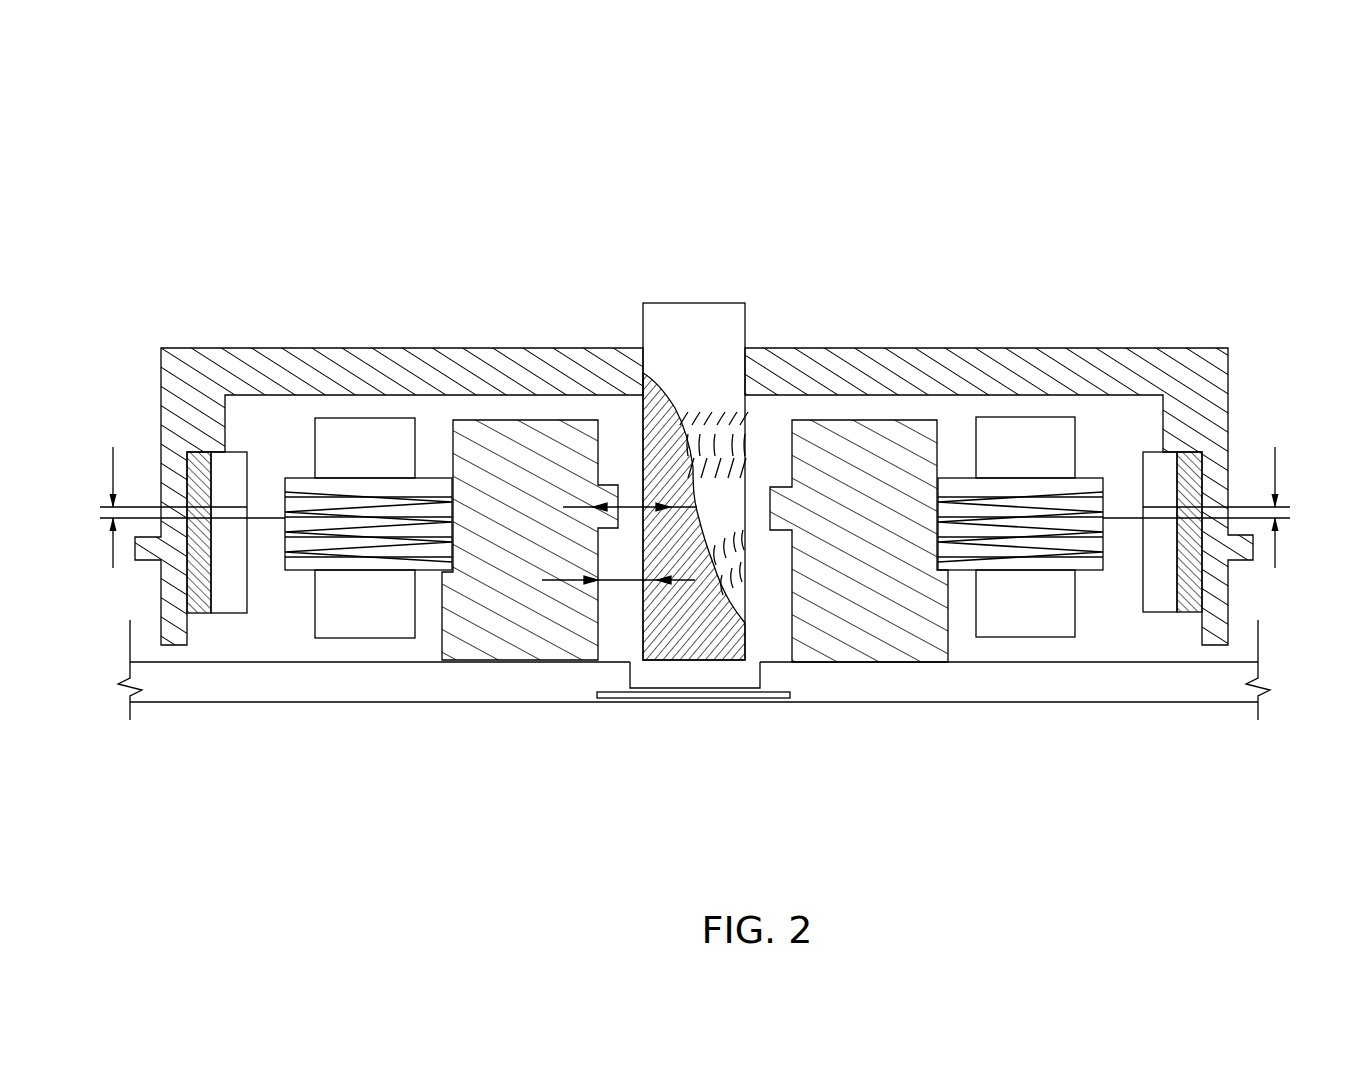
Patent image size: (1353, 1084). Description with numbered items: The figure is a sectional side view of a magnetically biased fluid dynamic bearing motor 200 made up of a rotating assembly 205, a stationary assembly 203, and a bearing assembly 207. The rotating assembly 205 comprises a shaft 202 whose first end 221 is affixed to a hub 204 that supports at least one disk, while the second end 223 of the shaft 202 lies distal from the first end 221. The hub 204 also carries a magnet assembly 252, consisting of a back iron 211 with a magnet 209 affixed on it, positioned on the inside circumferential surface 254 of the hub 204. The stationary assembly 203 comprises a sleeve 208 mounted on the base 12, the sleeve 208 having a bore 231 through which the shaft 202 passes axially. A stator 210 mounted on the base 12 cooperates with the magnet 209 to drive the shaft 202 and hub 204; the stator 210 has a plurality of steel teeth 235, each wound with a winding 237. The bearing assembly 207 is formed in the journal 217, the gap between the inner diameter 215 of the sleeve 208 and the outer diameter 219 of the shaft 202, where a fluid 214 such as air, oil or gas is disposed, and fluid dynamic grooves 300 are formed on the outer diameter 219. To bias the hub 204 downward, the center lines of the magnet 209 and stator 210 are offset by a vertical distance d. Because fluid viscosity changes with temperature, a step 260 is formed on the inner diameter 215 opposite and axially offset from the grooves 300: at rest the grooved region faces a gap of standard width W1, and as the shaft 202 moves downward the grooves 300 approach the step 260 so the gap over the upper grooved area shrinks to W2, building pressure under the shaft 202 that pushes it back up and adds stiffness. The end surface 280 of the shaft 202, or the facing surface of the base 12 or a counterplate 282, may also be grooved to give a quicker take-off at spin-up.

The fluid dynamic bearing motor 200 is at (300, 157).
The shaft 202 is at (721, 367).
The stationary assembly 203 is at (1010, 706).
The hub 204 is at (829, 377).
The rotating assembly 205 is at (487, 305).
The bearing assembly 207 is at (750, 428).
The sleeve 208 is at (838, 551).
The magnet 209 is at (1162, 478).
The stator 210 is at (1020, 440).
The back iron 211 is at (1217, 633).
The base 12 is at (694, 732).
The fluid 214 is at (628, 453).
The inner diameter of the sleeve 215 is at (798, 553).
The journal 217 is at (636, 420).
The outer diameter of the shaft 219 is at (798, 643).
The first end 221 is at (662, 325).
The second end 223 is at (678, 650).
The bore 231 is at (757, 601).
The teeth 235 is at (964, 536).
The winding 237 is at (996, 456).
The magnet assembly 252 is at (1205, 468).
The inside circumferential surface 254 is at (1160, 430).
The step 260 is at (775, 492).
The end surface of the shaft 280 is at (648, 665).
The counterplate 282 is at (662, 698).
The fluid dynamic grooves 300 is at (728, 387).
The standard gap width W1 is at (622, 583).
The reduced gap width W2 is at (627, 507).
The vertical distance d is at (692, 507).